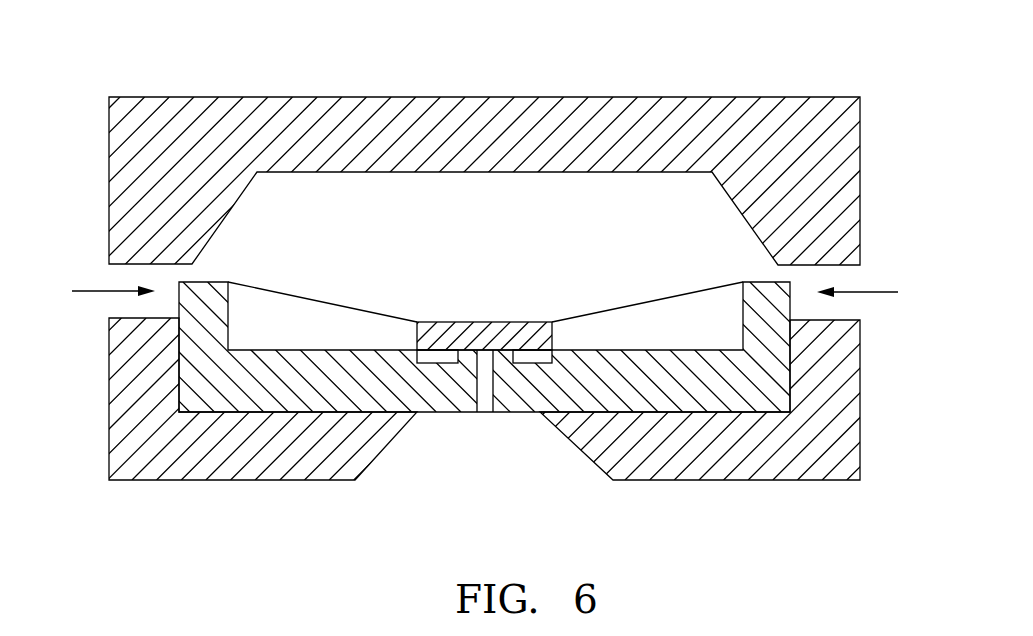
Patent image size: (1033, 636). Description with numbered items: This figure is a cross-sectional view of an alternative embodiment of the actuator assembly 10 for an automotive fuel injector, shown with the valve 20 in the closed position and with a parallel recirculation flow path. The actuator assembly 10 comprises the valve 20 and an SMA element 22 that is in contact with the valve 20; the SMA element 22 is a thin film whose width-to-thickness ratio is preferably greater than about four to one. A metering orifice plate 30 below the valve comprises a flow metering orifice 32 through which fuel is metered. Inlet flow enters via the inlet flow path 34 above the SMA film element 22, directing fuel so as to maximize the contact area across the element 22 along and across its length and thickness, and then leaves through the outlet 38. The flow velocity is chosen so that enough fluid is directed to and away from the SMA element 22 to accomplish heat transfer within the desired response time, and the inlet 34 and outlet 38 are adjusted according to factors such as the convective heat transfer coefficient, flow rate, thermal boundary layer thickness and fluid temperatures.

The actuator assembly 10 is at (692, 73).
The valve 20 is at (487, 332).
The SMA element 22 is at (688, 293).
The metering orifice plate 30 is at (450, 405).
The flow metering orifice 32 is at (492, 393).
The inlet flow path 34 is at (94, 292).
The outlet 38 is at (876, 292).